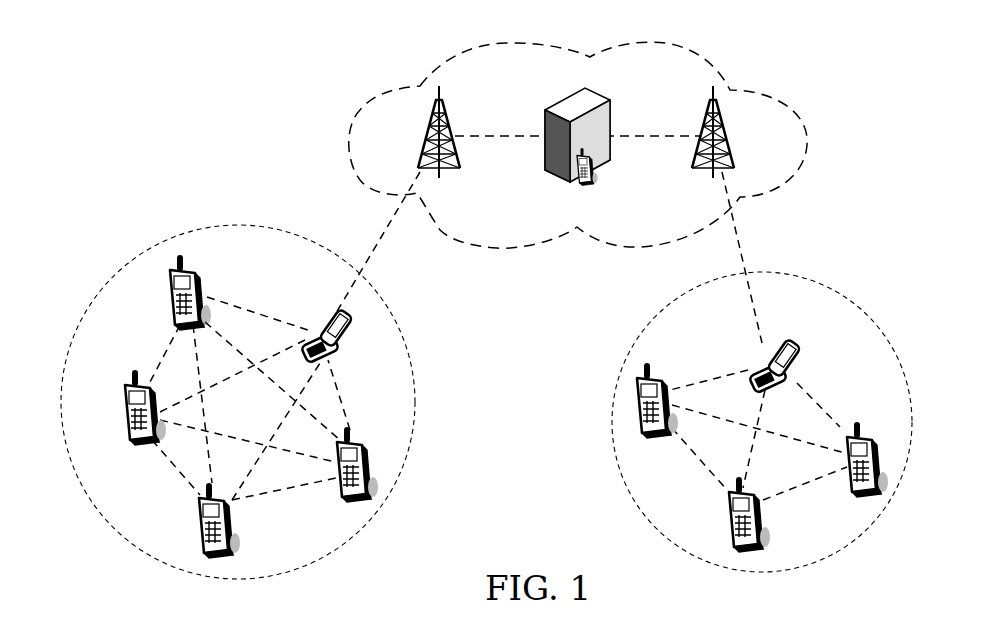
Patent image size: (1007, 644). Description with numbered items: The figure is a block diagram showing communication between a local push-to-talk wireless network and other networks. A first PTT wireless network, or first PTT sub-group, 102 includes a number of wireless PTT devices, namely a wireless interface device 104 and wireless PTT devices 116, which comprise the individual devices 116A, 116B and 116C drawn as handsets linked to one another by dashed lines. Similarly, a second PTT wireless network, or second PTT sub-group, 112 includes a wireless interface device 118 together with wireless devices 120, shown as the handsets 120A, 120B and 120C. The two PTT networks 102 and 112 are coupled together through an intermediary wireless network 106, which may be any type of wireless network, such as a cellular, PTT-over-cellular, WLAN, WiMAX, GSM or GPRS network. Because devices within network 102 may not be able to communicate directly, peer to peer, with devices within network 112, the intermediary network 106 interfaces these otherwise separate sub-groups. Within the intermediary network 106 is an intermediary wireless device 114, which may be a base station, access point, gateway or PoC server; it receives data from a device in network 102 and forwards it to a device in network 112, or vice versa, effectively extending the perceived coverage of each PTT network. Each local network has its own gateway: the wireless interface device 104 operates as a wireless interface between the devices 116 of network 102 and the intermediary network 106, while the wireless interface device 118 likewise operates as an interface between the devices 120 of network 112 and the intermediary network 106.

The first PTT wireless network 102 is at (210, 225).
The wireless interface device 104 is at (338, 313).
The intermediary wireless network 106 is at (422, 82).
The second PTT wireless network 112 is at (818, 283).
The intermediary wireless device 114 is at (573, 177).
The wireless PTT devices 116 is at (123, 408).
The wireless PTT device 116A is at (128, 407).
The wireless PTT device 116B is at (206, 525).
The wireless PTT device 116C is at (350, 470).
The wireless interface device 118 is at (763, 362).
The wireless devices 120 is at (867, 490).
The wireless device 120A is at (657, 405).
The wireless device 120B is at (746, 520).
The wireless device 120C is at (867, 464).